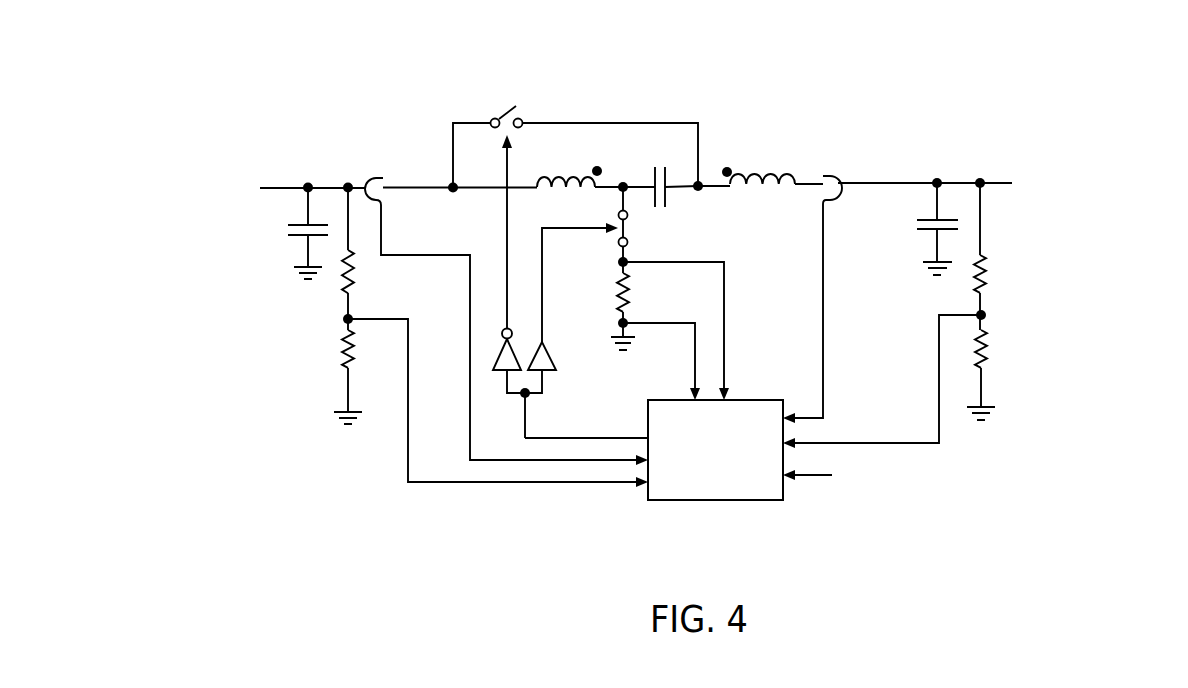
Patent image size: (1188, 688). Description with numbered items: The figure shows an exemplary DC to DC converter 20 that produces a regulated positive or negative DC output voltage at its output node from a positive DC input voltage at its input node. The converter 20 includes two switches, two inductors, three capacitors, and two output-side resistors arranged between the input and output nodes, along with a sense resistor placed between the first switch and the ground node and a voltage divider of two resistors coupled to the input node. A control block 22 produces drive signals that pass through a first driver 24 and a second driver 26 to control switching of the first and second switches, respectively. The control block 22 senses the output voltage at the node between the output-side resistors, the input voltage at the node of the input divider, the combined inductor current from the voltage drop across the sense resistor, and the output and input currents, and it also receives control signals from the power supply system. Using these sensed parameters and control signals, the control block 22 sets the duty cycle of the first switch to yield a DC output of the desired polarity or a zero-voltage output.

The DC to DC converter 20 is at (800, 66).
The control block 22 is at (715, 500).
The driver 24 is at (556, 351).
The driver 26 is at (503, 349).